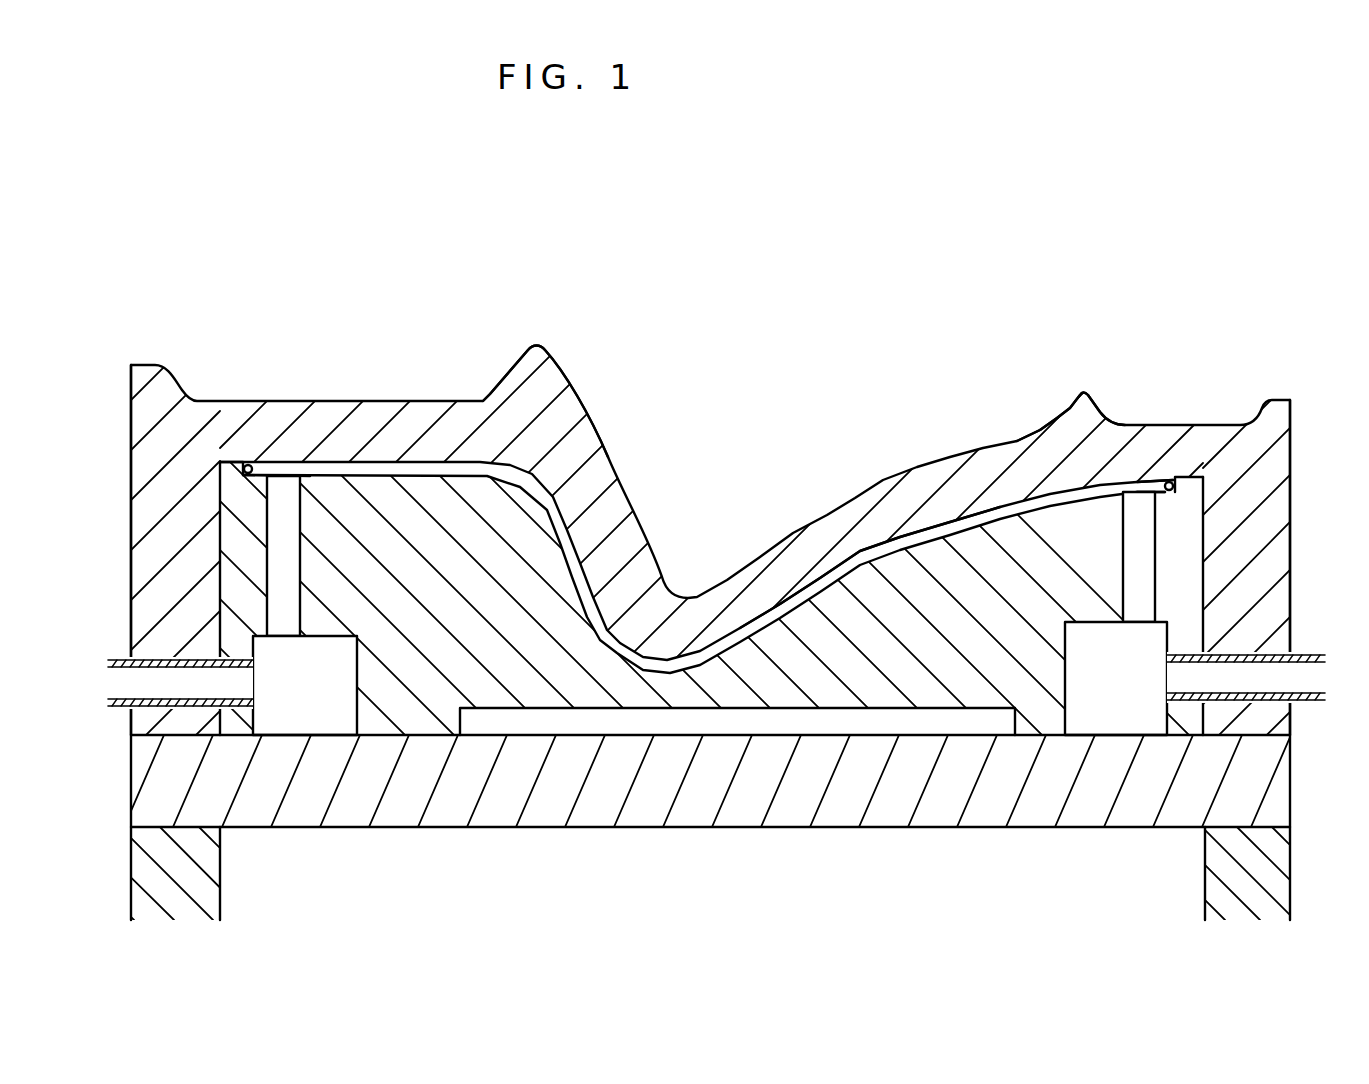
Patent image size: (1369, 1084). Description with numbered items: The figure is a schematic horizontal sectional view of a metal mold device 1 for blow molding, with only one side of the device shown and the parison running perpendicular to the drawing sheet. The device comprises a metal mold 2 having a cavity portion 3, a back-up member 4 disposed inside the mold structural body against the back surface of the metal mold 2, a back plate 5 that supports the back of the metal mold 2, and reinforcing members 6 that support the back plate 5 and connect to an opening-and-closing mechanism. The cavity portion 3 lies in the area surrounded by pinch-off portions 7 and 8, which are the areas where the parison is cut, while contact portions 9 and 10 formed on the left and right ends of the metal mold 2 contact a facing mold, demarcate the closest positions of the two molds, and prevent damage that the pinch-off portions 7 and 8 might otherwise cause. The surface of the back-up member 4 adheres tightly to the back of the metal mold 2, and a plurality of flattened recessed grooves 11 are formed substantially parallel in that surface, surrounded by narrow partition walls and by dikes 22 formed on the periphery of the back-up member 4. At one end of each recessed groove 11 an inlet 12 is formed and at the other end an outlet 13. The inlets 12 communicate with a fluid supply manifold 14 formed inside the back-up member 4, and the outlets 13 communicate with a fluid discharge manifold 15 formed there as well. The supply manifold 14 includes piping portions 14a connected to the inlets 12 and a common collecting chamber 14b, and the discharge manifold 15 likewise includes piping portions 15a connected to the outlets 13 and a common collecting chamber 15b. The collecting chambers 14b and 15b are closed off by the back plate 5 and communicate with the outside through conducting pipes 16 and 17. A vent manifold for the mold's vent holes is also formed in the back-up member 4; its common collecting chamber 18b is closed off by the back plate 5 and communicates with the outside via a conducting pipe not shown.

The metal mold device for blow molding 1 is at (230, 224).
The metal mold 2 is at (425, 412).
The cavity portion 3 is at (622, 454).
The back-up member 4 is at (368, 522).
The back plate 5 is at (637, 787).
The reinforcing members 6 is at (192, 874).
The pinch-off portion 7 is at (536, 343).
The pinch-off portion 8 is at (1085, 390).
The contact portion 9 is at (140, 360).
The contact portion 10 is at (1275, 395).
The recessed grooves 11 is at (855, 555).
The inlet 12 is at (279, 474).
The outlet 13 is at (1141, 490).
The fluid supply manifold 14 is at (220, 687).
The piping portions 14a is at (273, 558).
The common collecting chamber 14b is at (324, 708).
The fluid discharge manifold 15 is at (1212, 695).
The piping portions 15a is at (1142, 548).
The common collecting chamber 15b is at (1113, 708).
The conducting pipe 16 is at (123, 708).
The conducting pipe 17 is at (1304, 703).
The common collecting chamber 18b is at (782, 723).
The dikes 22 is at (248, 465).